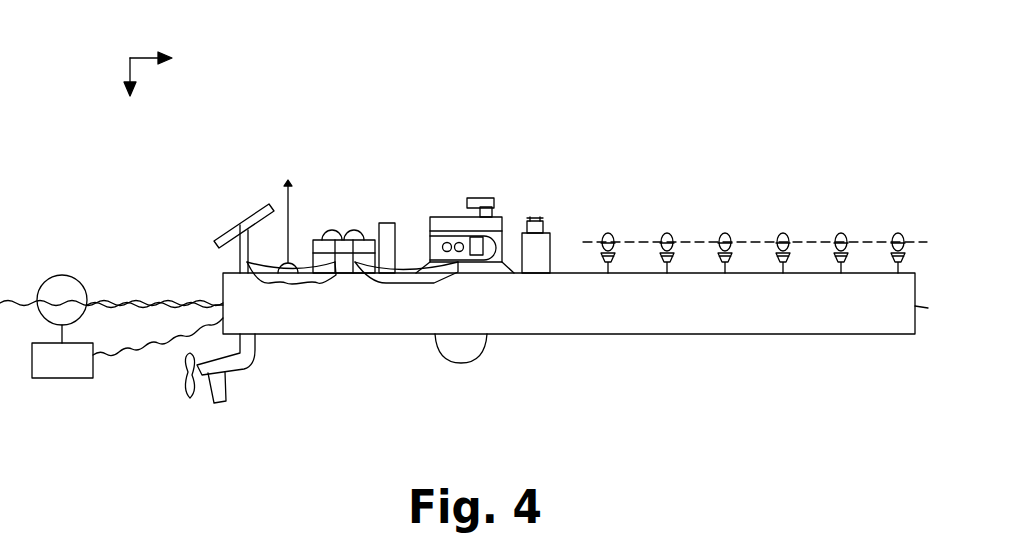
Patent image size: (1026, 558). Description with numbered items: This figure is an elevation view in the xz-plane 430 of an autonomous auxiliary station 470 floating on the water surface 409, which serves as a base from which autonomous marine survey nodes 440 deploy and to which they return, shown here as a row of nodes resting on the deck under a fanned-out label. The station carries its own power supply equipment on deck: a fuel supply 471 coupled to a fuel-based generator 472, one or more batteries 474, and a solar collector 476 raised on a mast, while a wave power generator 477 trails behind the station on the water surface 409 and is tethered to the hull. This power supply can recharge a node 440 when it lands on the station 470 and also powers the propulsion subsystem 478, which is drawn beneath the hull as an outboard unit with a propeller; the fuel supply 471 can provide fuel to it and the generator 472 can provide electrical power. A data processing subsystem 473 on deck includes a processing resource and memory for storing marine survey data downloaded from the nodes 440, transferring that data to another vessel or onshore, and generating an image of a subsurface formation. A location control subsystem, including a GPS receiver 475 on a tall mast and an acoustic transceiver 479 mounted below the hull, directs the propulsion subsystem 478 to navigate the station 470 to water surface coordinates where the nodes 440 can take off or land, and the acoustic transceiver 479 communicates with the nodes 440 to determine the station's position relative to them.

The xz-plane 430 is at (130, 58).
The autonomous auxiliary station 470 is at (702, 90).
The autonomous marine survey nodes 440 is at (898, 232).
The fuel supply 471 is at (535, 220).
The fuel-based generator 472 is at (448, 216).
The data processing subsystem 473 is at (386, 222).
The batteries 474 is at (343, 240).
The GPS receiver 475 is at (289, 182).
The solar collector 476 is at (238, 214).
The wave power generator 477 is at (62, 275).
The water surface 409 is at (128, 303).
The propulsion subsystem 478 is at (238, 370).
The acoustic transceiver 479 is at (463, 364).